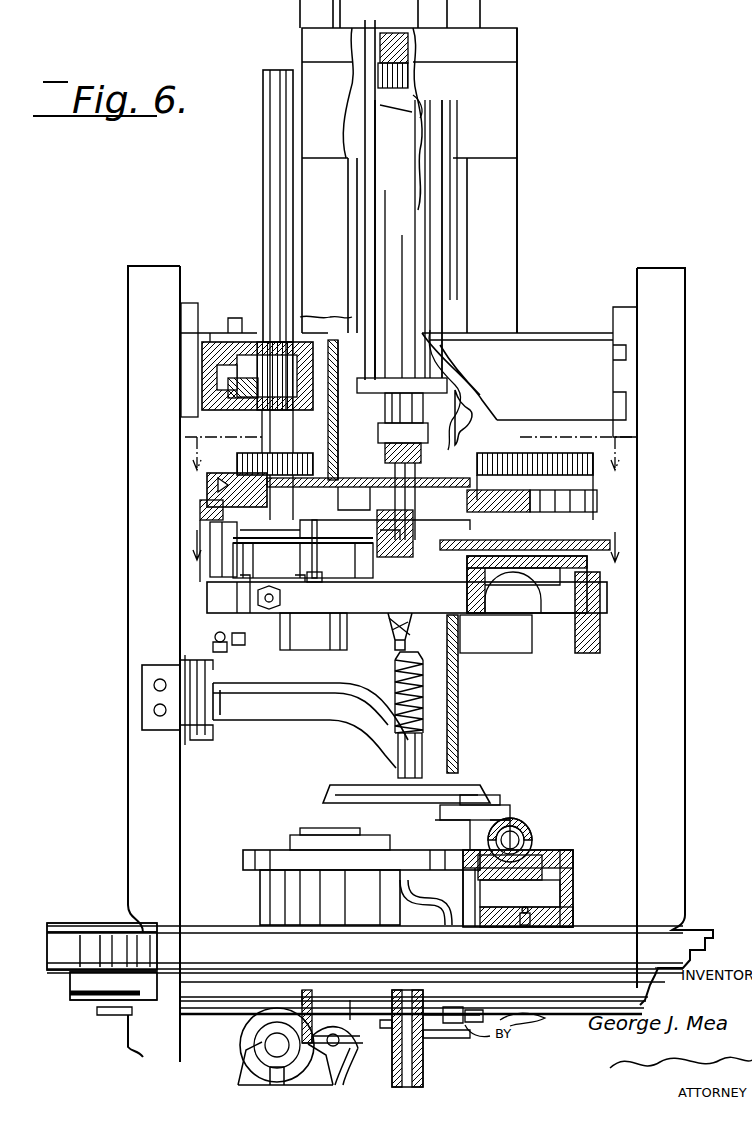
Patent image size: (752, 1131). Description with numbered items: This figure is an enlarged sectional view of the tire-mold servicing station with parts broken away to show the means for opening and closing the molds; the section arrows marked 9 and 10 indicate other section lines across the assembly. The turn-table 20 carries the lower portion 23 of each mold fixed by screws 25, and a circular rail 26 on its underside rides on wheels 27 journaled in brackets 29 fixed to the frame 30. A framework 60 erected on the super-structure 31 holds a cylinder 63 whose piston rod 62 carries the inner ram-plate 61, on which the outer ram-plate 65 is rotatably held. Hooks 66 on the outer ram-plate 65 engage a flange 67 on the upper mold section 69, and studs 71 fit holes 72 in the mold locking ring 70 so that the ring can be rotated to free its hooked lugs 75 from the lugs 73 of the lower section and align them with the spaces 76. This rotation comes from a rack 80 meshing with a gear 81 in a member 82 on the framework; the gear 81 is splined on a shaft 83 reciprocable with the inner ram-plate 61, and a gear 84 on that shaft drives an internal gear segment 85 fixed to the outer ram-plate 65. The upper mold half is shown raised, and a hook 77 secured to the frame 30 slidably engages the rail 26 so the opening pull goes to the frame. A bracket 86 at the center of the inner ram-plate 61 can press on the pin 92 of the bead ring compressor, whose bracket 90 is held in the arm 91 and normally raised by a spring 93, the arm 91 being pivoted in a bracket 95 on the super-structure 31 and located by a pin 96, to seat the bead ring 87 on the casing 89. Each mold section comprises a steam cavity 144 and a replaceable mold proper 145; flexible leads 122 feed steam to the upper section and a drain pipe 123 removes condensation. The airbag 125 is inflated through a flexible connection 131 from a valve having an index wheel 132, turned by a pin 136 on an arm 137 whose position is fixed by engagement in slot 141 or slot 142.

The section line 9- 9 is at (407, 468).
The section line 10- 10 is at (405, 557).
The turn-table 20 is at (85, 938).
The lower portion of the mold 23 is at (570, 886).
The screws 25 is at (526, 927).
The circular rail 26 is at (87, 985).
The wheels 27 is at (245, 1050).
The brackets 29 is at (258, 1075).
The frame 30 is at (140, 1052).
The super-structure 31 is at (625, 365).
The framework 60 is at (490, 265).
The inner ram-plate 61 is at (350, 478).
The piston rod 62 is at (412, 115).
The cylinder 63 is at (418, 210).
The outer ram-plate 65 is at (590, 505).
The hooks 66 is at (440, 532).
The flange 67 is at (360, 559).
The upper mold section 69 is at (556, 532).
The mold locking ring 70 is at (230, 597).
The studs 71 is at (205, 508).
The holes 72 is at (605, 580).
The lugs 73 is at (250, 860).
The hooked lugs 75 is at (305, 648).
The notches or spaces 76 is at (315, 865).
The hook 77 is at (395, 1068).
The rack 80 is at (250, 377).
The gear 81 is at (240, 392).
The member 82 is at (262, 333).
The shaft 83 is at (277, 200).
The gear 84 is at (240, 455).
The internal gear segment 85 is at (210, 497).
The bracket 86 is at (395, 645).
The bead ring 87 is at (470, 812).
The casing 89 is at (515, 825).
The bracket 90 is at (470, 778).
The arm 91 is at (272, 705).
The pin 92 is at (420, 712).
The spring 93 is at (420, 690).
The bracket 95 is at (195, 745).
The pin 96 is at (215, 640).
The flexible leads 122 is at (458, 740).
The drain pipe 123 is at (478, 1020).
The airbag 125 is at (540, 845).
The flexible connection 131 is at (400, 912).
The index wheel 132 is at (470, 1040).
The pin 136 is at (425, 1030).
The arm 137 is at (306, 1085).
The slot 141 is at (338, 1085).
The slot 142 is at (340, 1000).
The steam cavity 144 is at (588, 911).
The mold proper 145 is at (510, 761).